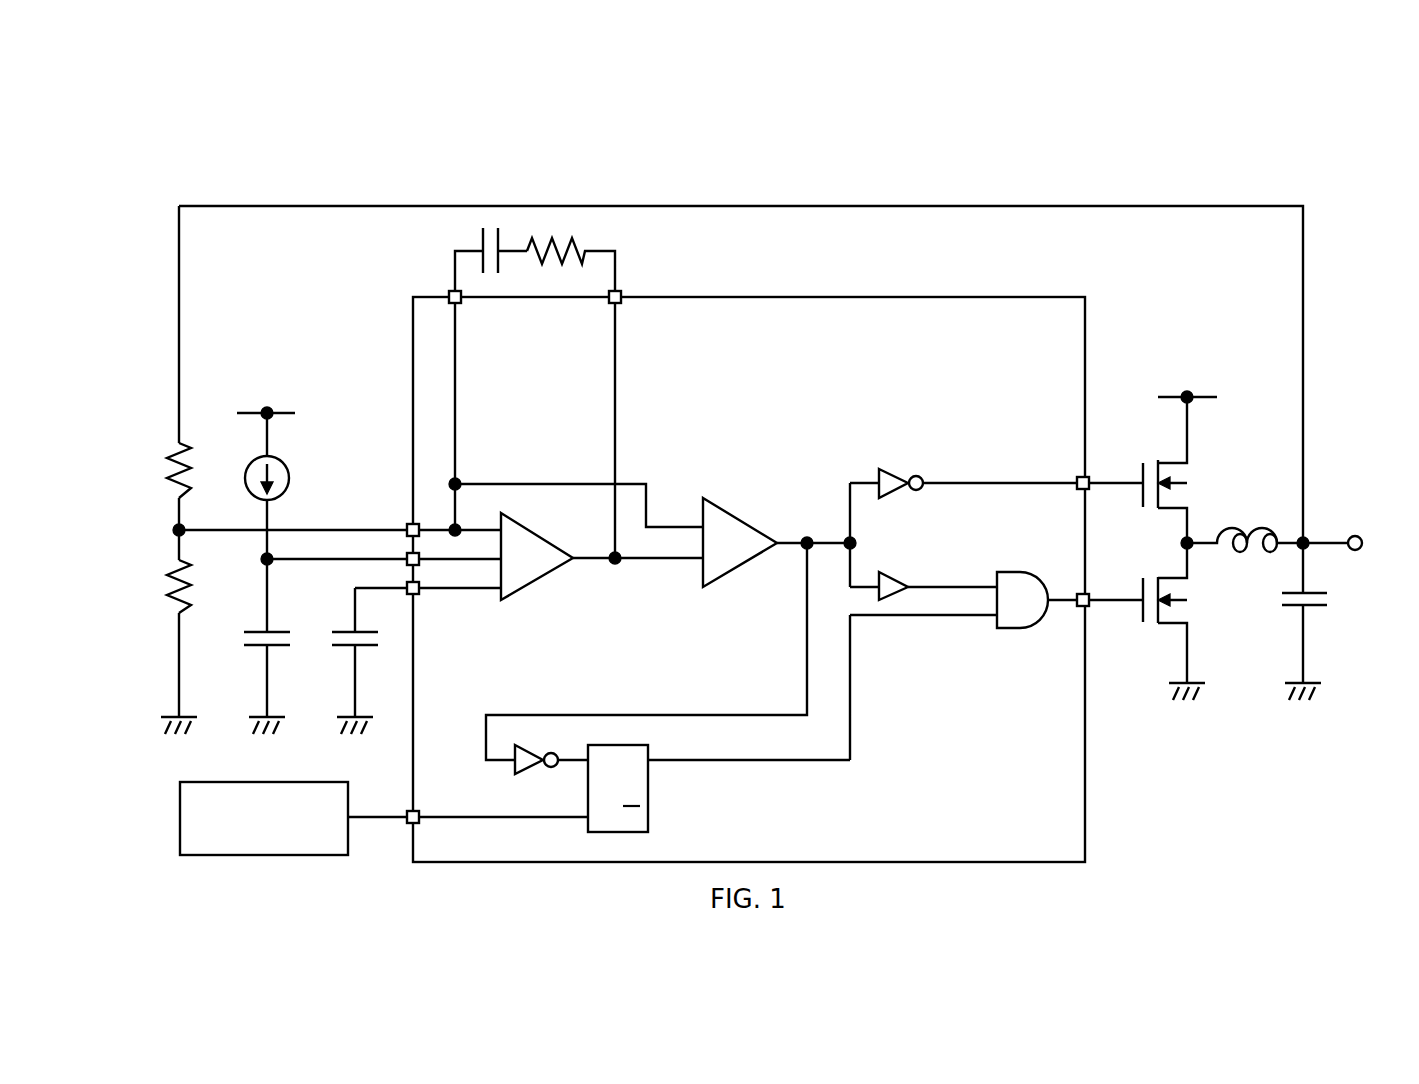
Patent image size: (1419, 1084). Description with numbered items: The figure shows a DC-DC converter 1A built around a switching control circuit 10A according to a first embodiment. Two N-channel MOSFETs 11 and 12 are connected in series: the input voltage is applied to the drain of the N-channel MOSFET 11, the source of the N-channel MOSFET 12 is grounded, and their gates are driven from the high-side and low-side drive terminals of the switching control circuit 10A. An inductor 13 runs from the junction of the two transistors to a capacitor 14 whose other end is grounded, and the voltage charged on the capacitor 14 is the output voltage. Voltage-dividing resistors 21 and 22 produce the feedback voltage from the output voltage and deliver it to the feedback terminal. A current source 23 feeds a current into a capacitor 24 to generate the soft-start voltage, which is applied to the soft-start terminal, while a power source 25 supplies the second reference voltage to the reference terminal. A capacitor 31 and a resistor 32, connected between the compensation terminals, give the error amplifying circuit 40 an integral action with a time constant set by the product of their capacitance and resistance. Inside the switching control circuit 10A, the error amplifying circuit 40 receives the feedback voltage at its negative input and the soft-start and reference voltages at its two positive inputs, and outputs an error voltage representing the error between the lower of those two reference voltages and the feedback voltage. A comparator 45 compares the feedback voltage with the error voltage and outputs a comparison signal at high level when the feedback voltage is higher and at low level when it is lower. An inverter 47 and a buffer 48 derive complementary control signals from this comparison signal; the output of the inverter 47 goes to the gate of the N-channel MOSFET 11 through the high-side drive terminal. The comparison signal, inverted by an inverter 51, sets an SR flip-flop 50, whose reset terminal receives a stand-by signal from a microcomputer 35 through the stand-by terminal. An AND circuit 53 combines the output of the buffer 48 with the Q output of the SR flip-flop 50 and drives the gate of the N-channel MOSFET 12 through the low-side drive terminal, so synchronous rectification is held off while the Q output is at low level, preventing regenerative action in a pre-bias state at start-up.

The DC-DC converter 1A is at (605, 142).
The switching control circuit 10A is at (413, 335).
The N-channel MOSFET 11 is at (1167, 462).
The N-channel MOSFET 12 is at (1167, 626).
The inductor 13 is at (1246, 528).
The capacitor 14 is at (1312, 608).
The resistor 21 is at (178, 452).
The resistor 22 is at (186, 614).
The current source 23 is at (290, 465).
The capacitor 24 is at (271, 648).
The power source 25 is at (356, 648).
The capacitor 31 is at (483, 240).
The resistor 32 is at (575, 254).
The microcomputer 35 is at (180, 795).
The error amplifying circuit 40 is at (538, 600).
The comparator 45 is at (735, 585).
The inverter 47 is at (893, 497).
The buffer 48 is at (897, 588).
The SR flip-flop 50 is at (648, 790).
The inverter 51 is at (515, 762).
The AND circuit 53 is at (1010, 630).